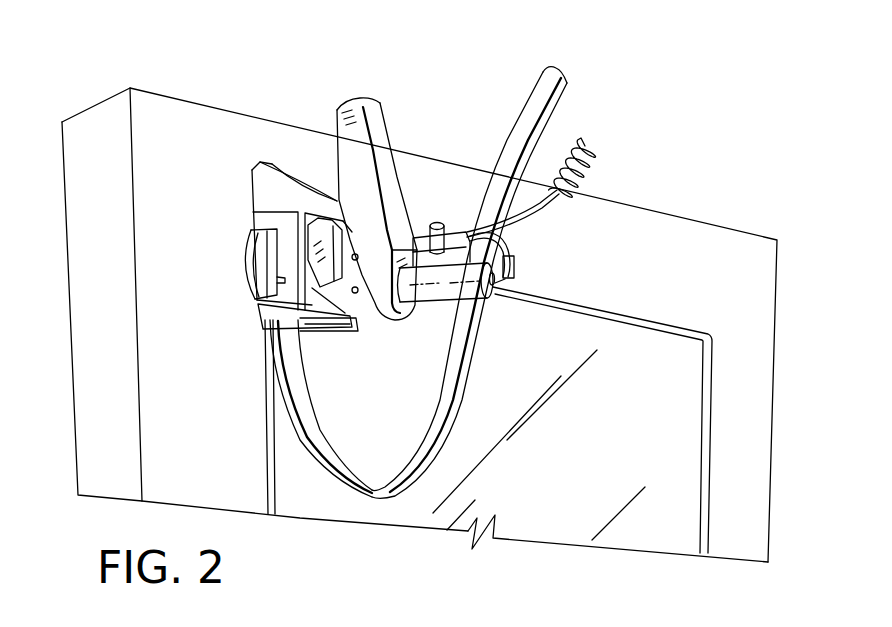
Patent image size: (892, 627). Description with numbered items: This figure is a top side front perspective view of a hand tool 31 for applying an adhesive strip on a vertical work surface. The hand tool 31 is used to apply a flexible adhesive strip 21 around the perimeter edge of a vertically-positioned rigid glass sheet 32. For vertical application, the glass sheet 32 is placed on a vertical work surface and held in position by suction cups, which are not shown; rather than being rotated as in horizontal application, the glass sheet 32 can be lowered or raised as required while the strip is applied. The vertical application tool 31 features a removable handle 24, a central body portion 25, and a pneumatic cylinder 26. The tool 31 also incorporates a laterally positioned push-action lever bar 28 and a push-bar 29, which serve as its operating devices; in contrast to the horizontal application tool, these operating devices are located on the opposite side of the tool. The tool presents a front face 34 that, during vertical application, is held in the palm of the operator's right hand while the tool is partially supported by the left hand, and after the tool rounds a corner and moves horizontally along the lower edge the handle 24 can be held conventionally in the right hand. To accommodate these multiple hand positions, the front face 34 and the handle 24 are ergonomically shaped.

The flexible adhesive strip 21 is at (532, 108).
The removable handle 24 is at (380, 147).
The central body portion 25 is at (357, 325).
The pneumatic cylinder 26 is at (447, 293).
The push-action lever bar 28 is at (318, 222).
The push-bar 29 is at (247, 257).
The hand tool 31 is at (254, 152).
The rigid glass sheet 32 is at (443, 530).
The front face 34 is at (323, 322).